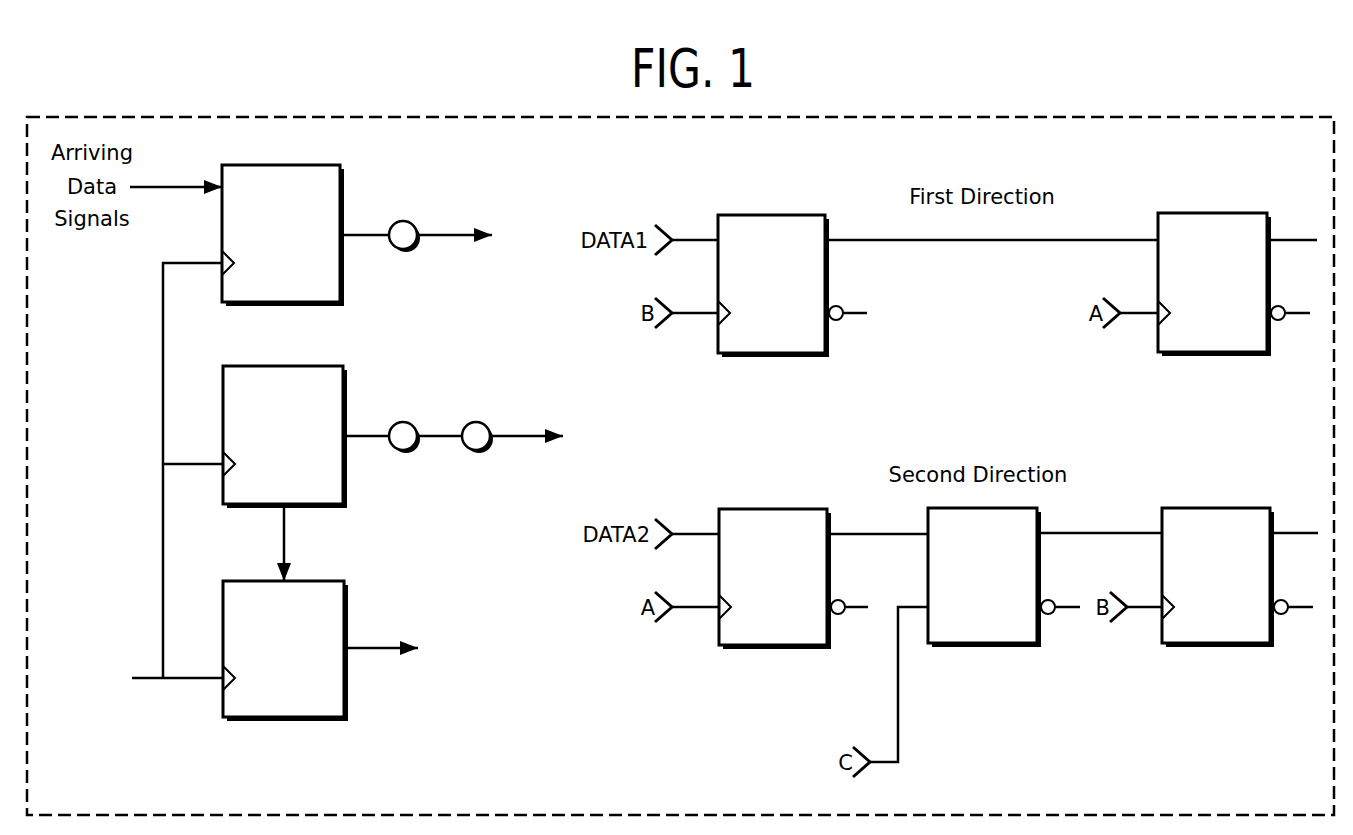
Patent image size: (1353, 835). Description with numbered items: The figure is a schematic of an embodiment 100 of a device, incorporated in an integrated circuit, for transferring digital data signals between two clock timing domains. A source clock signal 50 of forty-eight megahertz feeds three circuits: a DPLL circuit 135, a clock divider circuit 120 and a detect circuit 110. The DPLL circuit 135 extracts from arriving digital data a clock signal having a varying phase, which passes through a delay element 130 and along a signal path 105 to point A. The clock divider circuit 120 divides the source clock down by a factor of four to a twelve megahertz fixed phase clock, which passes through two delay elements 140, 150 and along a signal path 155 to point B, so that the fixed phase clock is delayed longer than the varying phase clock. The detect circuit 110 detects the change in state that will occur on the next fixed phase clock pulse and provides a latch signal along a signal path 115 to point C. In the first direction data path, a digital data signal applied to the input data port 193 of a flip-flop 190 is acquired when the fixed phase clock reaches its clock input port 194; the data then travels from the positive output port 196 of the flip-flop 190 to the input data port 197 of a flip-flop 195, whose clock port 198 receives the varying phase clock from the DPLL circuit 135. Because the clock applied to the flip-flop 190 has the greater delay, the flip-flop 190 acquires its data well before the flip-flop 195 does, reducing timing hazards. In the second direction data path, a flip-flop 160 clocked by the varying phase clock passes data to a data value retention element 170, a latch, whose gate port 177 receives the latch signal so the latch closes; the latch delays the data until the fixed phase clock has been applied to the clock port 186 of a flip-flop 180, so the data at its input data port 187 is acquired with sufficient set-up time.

The embodiment 100 is at (552, 769).
The source clock signal 50 is at (140, 491).
The DPLL circuit 135 is at (262, 257).
The clock divider circuit 120 is at (264, 490).
The detect circuit 110 is at (264, 687).
The delay element 130 is at (401, 220).
The delay element 140 is at (401, 421).
The delay element 150 is at (474, 421).
The signal path 105 is at (454, 232).
The signal path 155 is at (520, 432).
The signal path 115 is at (378, 642).
The flip-flop 190 is at (751, 295).
The input data port 193 is at (718, 235).
The clock input port 194 is at (718, 320).
The positive output port 196 is at (825, 235).
The flip-flop 195 is at (1193, 293).
The input data port 197 is at (1158, 235).
The clock port 198 is at (1158, 318).
The flip-flop 160 is at (753, 584).
The data value retention element 170 is at (963, 584).
The gate port 177 is at (928, 603).
The flip-flop 180 is at (1197, 584).
The input data port 187 is at (1162, 528).
The clock port 186 is at (1162, 612).